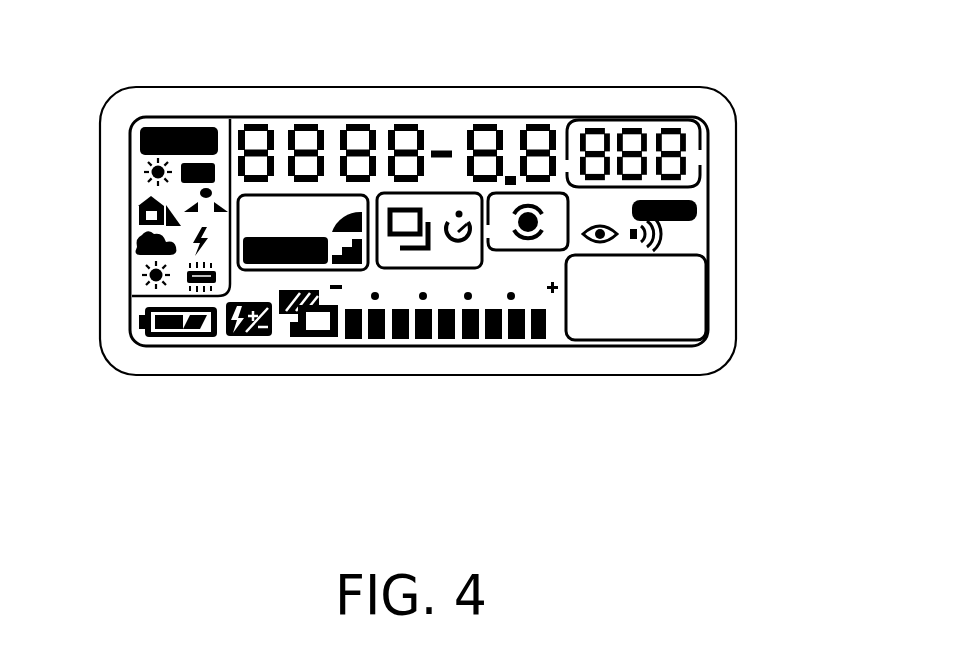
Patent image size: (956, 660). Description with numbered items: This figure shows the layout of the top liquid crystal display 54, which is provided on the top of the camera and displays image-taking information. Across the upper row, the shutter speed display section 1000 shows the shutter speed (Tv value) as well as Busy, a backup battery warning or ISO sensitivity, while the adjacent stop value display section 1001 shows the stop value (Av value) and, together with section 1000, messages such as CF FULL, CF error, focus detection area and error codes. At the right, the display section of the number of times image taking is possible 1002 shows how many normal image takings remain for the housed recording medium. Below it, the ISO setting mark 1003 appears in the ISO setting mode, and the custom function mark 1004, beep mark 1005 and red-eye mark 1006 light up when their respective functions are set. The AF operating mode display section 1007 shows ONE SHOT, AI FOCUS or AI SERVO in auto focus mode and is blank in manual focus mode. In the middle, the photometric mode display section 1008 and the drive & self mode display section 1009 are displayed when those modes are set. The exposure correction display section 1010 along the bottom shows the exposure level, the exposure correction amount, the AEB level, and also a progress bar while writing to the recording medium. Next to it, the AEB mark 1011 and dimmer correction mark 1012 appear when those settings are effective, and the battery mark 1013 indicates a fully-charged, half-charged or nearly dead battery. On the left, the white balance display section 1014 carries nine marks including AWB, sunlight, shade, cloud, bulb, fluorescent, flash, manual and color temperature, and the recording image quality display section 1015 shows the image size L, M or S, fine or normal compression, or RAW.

The top liquid crystal display 54 is at (724, 89).
The shutter speed display section 1000 is at (303, 125).
The stop value display section 1001 is at (510, 125).
The display section of the number of times image taking is possible 1002 is at (622, 198).
The ISO setting mark 1003 is at (683, 152).
The custom function mark 1004 is at (697, 203).
The beep mark 1005 is at (663, 230).
The red-eye mark 1006 is at (693, 267).
The AF operating mode display section 1007 is at (697, 322).
The photometric mode display section 1008 is at (540, 240).
The drive & self mode display section 1009 is at (453, 257).
The exposure correction display section 1010 is at (405, 332).
The AEB mark 1011 is at (313, 332).
The dimmer correction mark 1012 is at (233, 332).
The battery mark 1013 is at (142, 332).
The white balance display section 1014 is at (148, 188).
The recording image quality display section 1015 is at (263, 212).